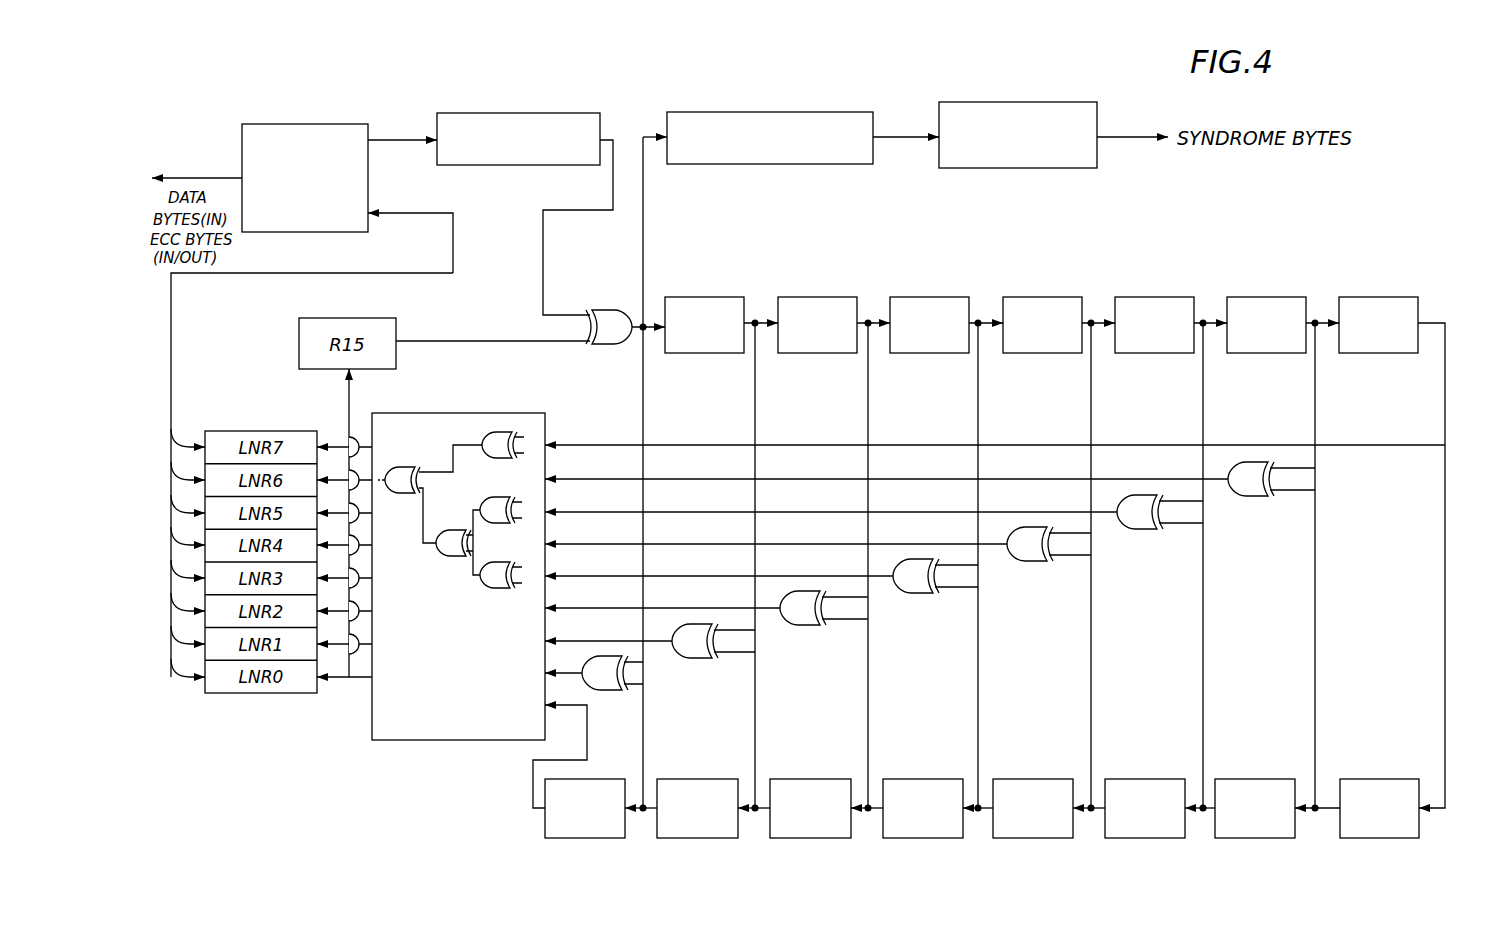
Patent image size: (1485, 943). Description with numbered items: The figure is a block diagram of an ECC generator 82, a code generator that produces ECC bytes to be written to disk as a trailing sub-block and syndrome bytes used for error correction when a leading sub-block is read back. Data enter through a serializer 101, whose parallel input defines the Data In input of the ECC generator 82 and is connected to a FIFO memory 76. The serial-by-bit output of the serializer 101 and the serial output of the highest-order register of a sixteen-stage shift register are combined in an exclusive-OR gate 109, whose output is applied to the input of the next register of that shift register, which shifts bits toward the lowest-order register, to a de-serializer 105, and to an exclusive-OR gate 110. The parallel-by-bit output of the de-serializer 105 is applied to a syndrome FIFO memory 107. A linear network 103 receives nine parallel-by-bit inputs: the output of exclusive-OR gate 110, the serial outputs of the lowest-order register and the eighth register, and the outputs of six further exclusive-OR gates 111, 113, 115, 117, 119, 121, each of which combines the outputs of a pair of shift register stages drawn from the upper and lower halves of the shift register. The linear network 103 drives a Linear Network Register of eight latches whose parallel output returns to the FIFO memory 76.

The FIFO memory 76 is at (299, 124).
The serializer 101 is at (557, 113).
The de-serializer 105 is at (767, 112).
The syndrome FIFO memory 107 is at (1007, 102).
The exclusive-OR gate 109 is at (597, 347).
The linear network 103 is at (372, 725).
The exclusive-OR gate 110 is at (608, 690).
The exclusive-OR gate 111 is at (702, 658).
The exclusive-OR gate 113 is at (810, 625).
The exclusive-OR gate 115 is at (923, 593).
The exclusive-OR gate 117 is at (1030, 561).
The exclusive-OR gate 119 is at (1140, 529).
The exclusive-OR gate 121 is at (1257, 496).
The ECC generator 82 is at (345, 788).